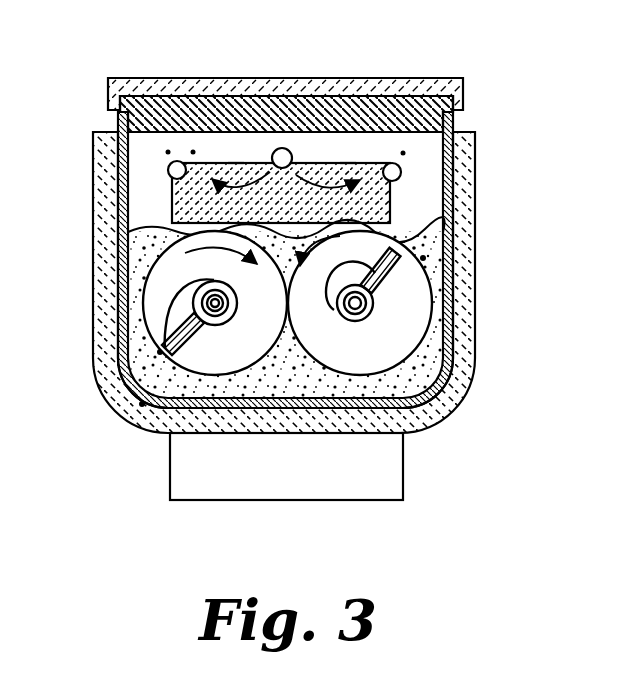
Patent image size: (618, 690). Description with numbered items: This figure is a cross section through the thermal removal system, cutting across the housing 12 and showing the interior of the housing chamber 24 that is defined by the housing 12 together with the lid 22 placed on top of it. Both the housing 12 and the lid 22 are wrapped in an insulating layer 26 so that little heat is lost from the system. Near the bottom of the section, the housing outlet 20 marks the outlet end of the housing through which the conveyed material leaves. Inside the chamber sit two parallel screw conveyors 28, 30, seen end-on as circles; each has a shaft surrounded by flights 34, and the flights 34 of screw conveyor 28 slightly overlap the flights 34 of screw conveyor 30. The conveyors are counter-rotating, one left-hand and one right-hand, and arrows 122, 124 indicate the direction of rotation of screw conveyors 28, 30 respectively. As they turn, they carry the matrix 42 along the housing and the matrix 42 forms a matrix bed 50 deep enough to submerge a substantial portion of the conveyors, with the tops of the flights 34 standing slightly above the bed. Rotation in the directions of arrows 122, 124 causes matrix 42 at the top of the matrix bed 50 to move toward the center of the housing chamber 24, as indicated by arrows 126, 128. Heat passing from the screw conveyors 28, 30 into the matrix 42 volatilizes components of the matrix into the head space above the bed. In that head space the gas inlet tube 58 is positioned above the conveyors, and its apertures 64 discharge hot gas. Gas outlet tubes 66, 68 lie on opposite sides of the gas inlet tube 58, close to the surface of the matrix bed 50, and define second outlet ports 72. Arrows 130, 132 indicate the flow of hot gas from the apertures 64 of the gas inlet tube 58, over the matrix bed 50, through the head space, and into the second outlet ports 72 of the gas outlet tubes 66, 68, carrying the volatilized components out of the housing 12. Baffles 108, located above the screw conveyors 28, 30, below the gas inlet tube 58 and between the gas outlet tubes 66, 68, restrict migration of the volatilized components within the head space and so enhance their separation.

The housing 12 is at (112, 317).
The housing outlet 20 is at (403, 476).
The lid 22 is at (388, 96).
The housing chamber 24 is at (424, 384).
The insulating layer 26 is at (124, 78).
The screw conveyor 28 is at (421, 361).
The screw conveyor 30 is at (153, 355).
The flights 34 is at (222, 367).
The matrix 42 is at (142, 404).
The matrix bed 50 is at (430, 258).
The gas inlet tube 58 is at (285, 148).
The apertures 64 is at (255, 162).
The gas outlet tube 66 is at (406, 149).
The gas outlet tube 68 is at (167, 149).
The second outlet ports 72 is at (172, 186).
The baffles 108 is at (192, 149).
The arrow 122 is at (243, 258).
The arrow 124 is at (312, 275).
The arrow 126 is at (332, 215).
The arrow 128 is at (243, 215).
The arrow 130 is at (348, 162).
The arrow 132 is at (236, 162).